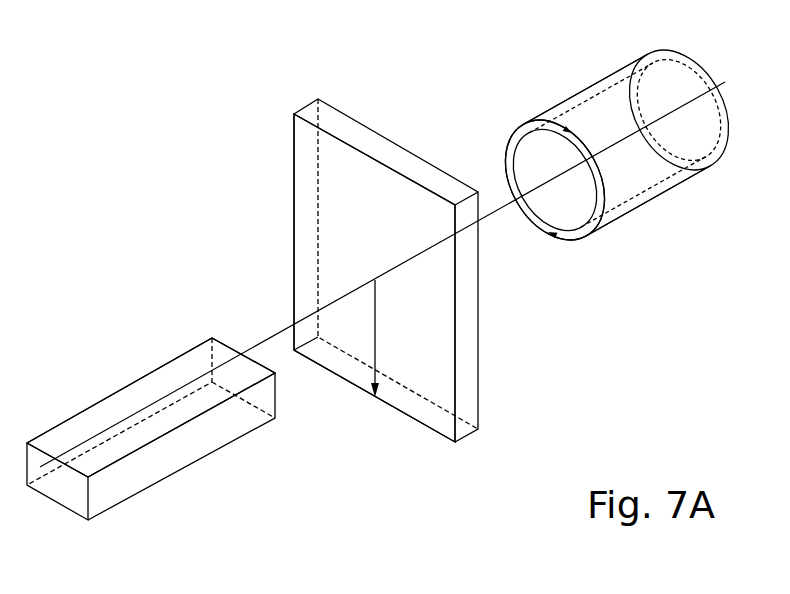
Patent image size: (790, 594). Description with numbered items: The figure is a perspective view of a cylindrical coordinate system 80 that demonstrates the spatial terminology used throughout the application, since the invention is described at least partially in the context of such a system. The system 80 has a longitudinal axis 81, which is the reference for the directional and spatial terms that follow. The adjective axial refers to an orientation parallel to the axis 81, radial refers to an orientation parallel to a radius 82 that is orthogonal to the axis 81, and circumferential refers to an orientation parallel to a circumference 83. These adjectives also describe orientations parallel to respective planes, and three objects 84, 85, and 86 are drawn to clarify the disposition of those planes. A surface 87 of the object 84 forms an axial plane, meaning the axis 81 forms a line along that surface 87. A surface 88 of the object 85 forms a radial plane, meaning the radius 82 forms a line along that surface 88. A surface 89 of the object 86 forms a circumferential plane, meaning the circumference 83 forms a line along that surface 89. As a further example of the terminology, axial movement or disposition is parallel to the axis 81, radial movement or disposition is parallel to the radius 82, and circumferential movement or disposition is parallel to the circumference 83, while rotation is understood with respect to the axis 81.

The cylindrical coordinate system 80 is at (255, 155).
The longitudinal axis 81 is at (717, 83).
The radius 82 is at (375, 330).
The circumference 83 is at (503, 142).
The object 84 is at (115, 508).
The object 85 is at (487, 435).
The object 86 is at (647, 217).
The surface 87 is at (110, 412).
The surface 88 is at (310, 231).
The surface 89 is at (583, 83).